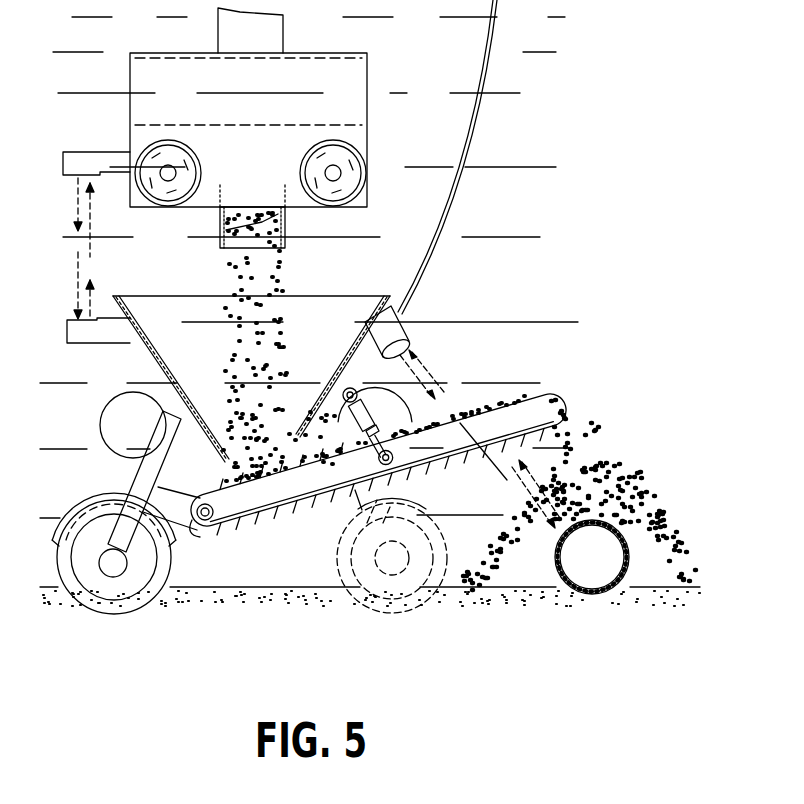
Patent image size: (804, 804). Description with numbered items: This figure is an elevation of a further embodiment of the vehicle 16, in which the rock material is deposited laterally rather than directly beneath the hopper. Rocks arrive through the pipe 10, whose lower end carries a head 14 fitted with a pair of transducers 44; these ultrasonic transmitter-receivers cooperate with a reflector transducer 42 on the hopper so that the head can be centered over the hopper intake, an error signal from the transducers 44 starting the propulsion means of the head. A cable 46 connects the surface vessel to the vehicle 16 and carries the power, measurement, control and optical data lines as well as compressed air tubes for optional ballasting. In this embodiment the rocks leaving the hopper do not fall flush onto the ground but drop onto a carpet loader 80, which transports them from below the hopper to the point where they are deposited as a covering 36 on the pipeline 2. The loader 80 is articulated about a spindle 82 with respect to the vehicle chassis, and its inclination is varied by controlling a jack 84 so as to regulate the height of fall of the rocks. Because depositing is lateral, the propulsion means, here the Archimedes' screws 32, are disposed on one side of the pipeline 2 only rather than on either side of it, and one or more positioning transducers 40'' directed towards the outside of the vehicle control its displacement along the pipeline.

The pipe 10 is at (218, 30).
The head 14 is at (371, 87).
The transducers 44 is at (84, 160).
The transducer 42 is at (102, 334).
The cable 46 is at (464, 153).
The vehicle 16 is at (392, 246).
The positioning transducers 40'' is at (425, 321).
The jack 84 is at (405, 380).
The carpet loader 80 is at (297, 512).
The spindle 82 is at (205, 524).
The Archimedes' screws 32 is at (98, 604).
The covering 36 is at (628, 478).
The pipeline 2 is at (630, 556).